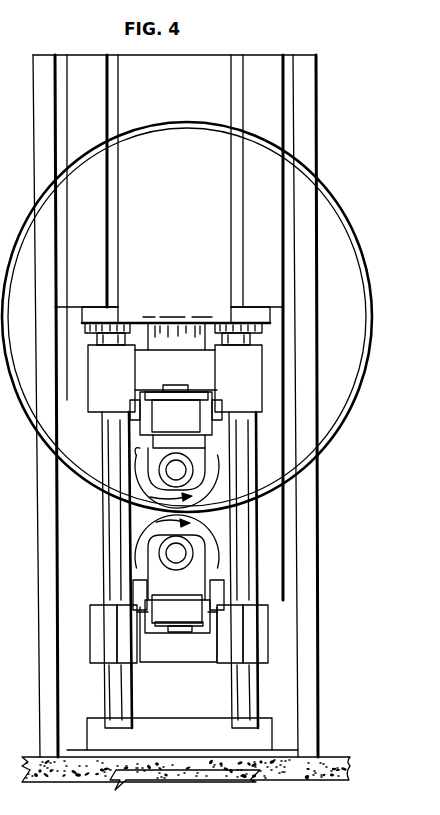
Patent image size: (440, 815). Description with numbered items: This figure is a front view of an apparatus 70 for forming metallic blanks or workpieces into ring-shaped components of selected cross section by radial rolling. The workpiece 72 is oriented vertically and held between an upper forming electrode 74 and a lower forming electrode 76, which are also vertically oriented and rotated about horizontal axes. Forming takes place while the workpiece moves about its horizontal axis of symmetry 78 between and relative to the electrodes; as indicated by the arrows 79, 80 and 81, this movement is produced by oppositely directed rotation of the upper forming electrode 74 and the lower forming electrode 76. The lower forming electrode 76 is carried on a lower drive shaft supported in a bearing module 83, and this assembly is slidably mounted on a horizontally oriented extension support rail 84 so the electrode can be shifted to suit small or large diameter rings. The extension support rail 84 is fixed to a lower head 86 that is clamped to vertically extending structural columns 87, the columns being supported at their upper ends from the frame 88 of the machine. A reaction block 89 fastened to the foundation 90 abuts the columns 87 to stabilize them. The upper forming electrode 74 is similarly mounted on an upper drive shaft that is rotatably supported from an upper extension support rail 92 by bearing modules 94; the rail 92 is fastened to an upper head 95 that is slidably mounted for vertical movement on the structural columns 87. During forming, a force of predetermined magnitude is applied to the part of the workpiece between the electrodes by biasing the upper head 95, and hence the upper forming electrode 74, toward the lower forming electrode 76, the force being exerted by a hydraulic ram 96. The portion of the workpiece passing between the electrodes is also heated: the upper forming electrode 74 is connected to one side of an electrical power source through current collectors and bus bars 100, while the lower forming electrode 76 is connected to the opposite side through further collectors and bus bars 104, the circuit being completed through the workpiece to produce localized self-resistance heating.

The apparatus 70 is at (75, 42).
The workpiece 72 is at (180, 121).
The upper forming electrode 74 is at (214, 478).
The lower forming electrode 76 is at (200, 530).
The horizontal axis of symmetry 78 is at (176, 330).
The arrow 79 is at (148, 509).
The arrow 80 is at (156, 524).
The arrow 81 is at (143, 152).
The bearing module 83 is at (200, 570).
The extension support rail 84 is at (138, 592).
The lower head 86 is at (180, 650).
The structural columns 87 is at (230, 705).
The frame 88 is at (160, 92).
The reaction block 89 is at (270, 724).
The foundation 90 is at (330, 759).
The upper extension support rail 92 is at (131, 413).
The bearing modules 94 is at (200, 448).
The upper head 95 is at (120, 372).
The hydraulic ram 96 is at (172, 332).
The bus bars 100 is at (178, 390).
The bus bars 104 is at (182, 632).